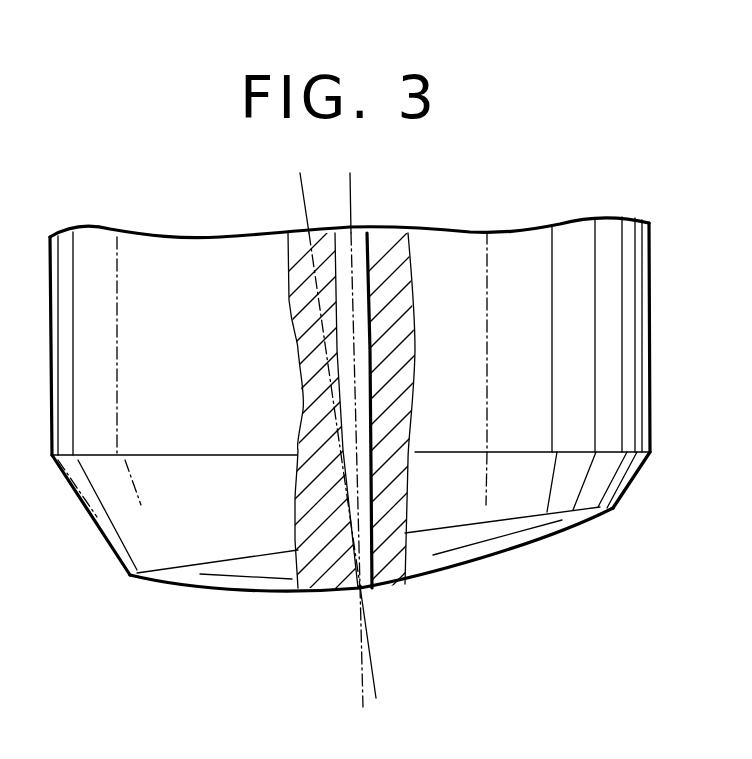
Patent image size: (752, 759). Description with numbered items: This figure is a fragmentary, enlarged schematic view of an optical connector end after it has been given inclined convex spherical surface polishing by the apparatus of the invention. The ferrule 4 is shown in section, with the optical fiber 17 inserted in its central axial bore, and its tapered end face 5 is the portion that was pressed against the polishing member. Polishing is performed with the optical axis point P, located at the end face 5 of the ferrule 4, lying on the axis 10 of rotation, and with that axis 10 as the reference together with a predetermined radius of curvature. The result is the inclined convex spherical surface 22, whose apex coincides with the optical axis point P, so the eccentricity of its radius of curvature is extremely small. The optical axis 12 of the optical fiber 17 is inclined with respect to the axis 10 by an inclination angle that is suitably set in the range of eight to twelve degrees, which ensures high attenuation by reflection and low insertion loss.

The ferrule 4 is at (627, 363).
The end face 5 is at (605, 468).
The inclined convex spherical surface 22 is at (508, 553).
The optical fiber 17 is at (374, 268).
The axis of rotation 10 is at (300, 208).
The optical axis 12 is at (352, 202).
The optical axis point P is at (358, 589).